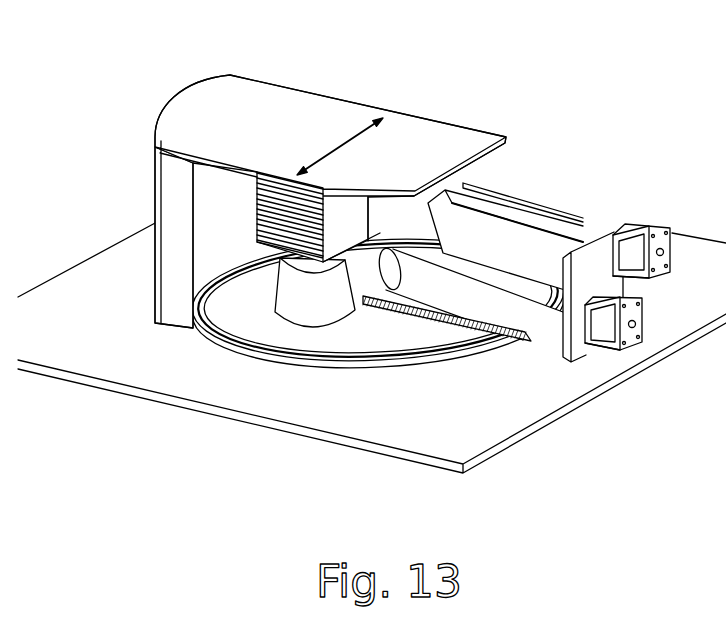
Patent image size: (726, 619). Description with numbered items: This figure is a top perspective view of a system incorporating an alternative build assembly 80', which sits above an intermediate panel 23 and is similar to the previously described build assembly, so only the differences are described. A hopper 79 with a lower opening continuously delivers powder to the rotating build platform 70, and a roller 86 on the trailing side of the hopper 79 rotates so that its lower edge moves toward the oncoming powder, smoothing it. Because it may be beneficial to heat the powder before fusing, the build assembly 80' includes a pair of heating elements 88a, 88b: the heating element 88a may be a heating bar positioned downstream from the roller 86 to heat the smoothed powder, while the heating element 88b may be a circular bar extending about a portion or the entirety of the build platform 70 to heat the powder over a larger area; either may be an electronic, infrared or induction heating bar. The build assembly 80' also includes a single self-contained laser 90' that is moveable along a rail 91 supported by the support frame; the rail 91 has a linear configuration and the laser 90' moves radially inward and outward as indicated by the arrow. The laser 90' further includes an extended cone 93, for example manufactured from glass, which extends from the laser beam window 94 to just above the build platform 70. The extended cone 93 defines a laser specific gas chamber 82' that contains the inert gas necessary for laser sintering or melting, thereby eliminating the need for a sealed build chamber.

The intermediate panel 23 is at (73, 362).
The build platform 70 is at (414, 332).
The hopper 79 is at (548, 216).
The alternative build assembly 80' is at (542, 64).
The laser specific gas chamber 82' is at (358, 304).
The roller 86 is at (544, 352).
The heating element 88a is at (525, 331).
The heating element 88b is at (253, 343).
The laser 90' is at (296, 201).
The rail 91 is at (321, 147).
The extended cone 93 is at (327, 302).
The laser beam window 94 is at (262, 283).